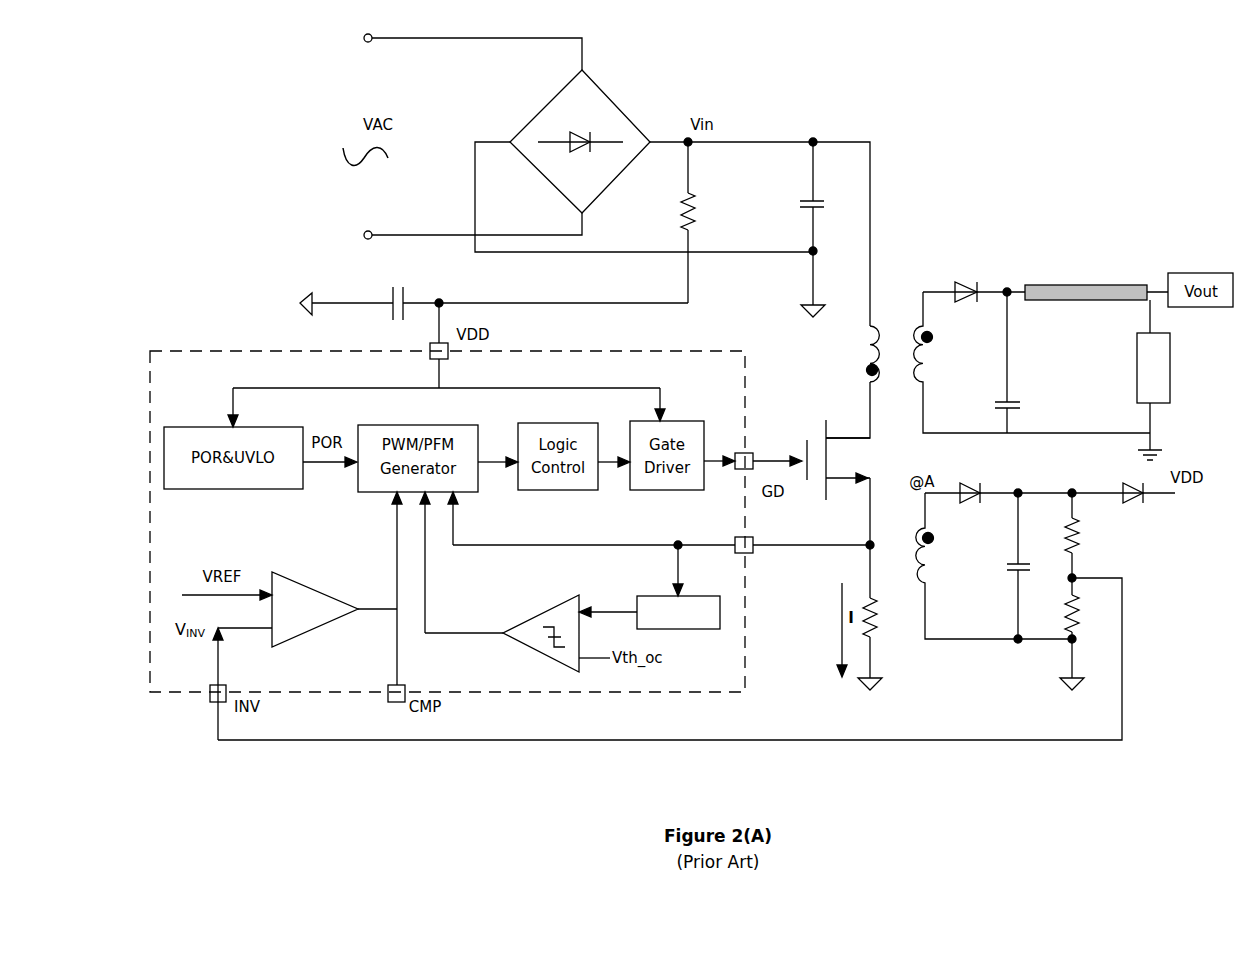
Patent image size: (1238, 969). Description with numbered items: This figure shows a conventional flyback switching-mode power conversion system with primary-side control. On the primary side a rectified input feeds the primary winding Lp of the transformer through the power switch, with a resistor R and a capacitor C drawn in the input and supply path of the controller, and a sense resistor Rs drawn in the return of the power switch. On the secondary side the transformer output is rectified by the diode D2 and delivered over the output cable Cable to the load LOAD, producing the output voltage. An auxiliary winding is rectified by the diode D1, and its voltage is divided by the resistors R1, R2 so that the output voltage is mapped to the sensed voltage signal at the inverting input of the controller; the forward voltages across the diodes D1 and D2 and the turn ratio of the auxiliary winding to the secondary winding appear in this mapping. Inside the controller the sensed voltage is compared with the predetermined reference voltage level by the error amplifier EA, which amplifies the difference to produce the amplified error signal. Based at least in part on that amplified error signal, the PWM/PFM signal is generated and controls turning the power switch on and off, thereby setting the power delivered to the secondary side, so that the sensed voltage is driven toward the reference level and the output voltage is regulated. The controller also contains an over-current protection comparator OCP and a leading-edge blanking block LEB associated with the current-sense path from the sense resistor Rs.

The input resistor R is at (678, 222).
The capacitor C is at (494, 311).
The primary winding Lp is at (861, 354).
The diode D2 is at (965, 278).
The output cable Cable is at (1087, 274).
The load LOAD is at (1153, 351).
The sense resistor Rs is at (883, 617).
The diode D1 is at (1050, 509).
The feedback resistor R1 is at (1087, 535).
The feedback resistor R2 is at (1085, 634).
The error amplifier EA is at (315, 609).
The over-current comparator OCP is at (536, 633).
The leading edge blanking LEB is at (678, 612).